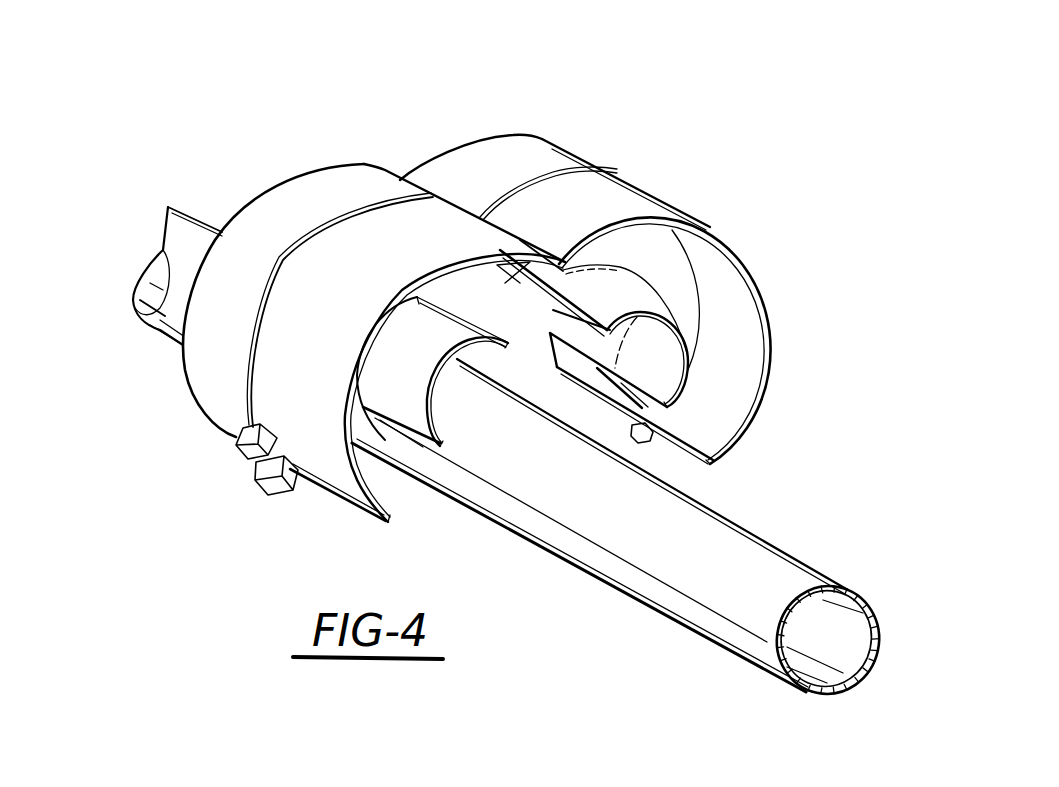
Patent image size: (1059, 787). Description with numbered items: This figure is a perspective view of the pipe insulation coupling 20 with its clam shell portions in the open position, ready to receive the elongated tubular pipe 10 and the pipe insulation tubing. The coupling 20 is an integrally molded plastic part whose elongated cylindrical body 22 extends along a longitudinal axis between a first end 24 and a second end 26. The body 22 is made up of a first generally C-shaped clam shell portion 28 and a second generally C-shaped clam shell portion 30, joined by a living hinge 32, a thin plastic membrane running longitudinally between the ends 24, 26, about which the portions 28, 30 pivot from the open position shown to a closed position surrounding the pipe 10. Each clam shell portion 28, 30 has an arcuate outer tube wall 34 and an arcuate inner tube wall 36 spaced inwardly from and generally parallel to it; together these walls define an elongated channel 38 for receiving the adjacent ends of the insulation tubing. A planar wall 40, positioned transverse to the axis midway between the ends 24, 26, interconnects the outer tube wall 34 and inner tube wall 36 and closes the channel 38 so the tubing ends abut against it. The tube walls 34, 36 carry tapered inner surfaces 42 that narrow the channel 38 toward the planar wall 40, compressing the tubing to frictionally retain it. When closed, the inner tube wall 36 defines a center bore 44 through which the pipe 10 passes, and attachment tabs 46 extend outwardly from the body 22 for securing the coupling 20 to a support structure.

The elongated tubular pipe 10 is at (830, 580).
The pipe insulation coupling 20 is at (718, 128).
The elongated cylindrical body 22 is at (297, 217).
The first end 24 is at (241, 208).
The second end 26 is at (744, 431).
The first clam shell portion 28 is at (350, 298).
The second clam shell portion 30 is at (606, 212).
The living hinge 32 is at (437, 197).
The arcuate outer tube wall 34 is at (775, 310).
The arcuate inner tube wall 36 is at (422, 398).
The elongated channel 38 is at (655, 253).
The planar wall 40 is at (694, 295).
The tapered inner surfaces 42 is at (735, 288).
The center bore 44 is at (598, 346).
The attachment tabs 46 is at (247, 470).